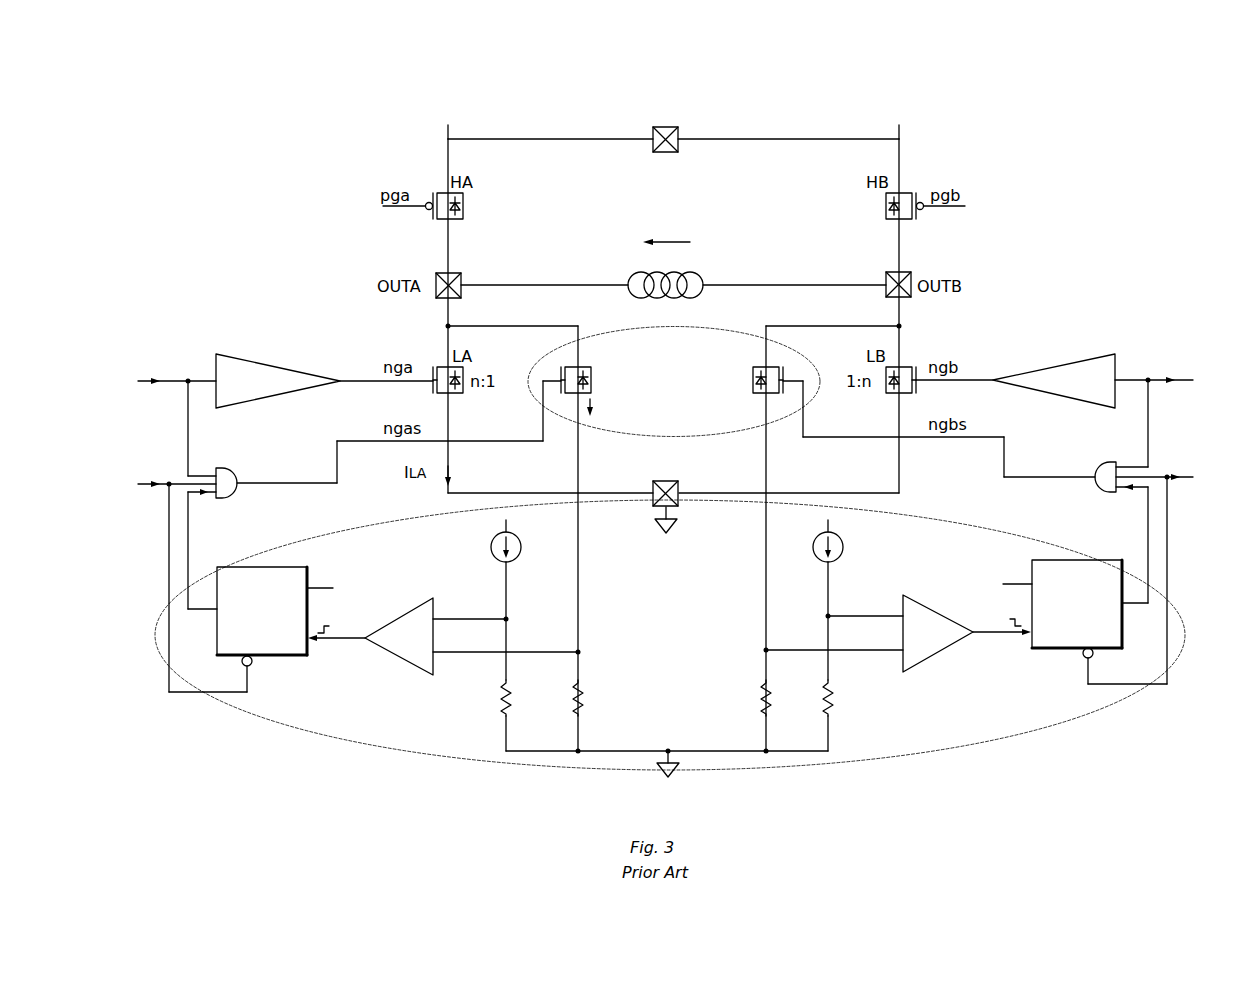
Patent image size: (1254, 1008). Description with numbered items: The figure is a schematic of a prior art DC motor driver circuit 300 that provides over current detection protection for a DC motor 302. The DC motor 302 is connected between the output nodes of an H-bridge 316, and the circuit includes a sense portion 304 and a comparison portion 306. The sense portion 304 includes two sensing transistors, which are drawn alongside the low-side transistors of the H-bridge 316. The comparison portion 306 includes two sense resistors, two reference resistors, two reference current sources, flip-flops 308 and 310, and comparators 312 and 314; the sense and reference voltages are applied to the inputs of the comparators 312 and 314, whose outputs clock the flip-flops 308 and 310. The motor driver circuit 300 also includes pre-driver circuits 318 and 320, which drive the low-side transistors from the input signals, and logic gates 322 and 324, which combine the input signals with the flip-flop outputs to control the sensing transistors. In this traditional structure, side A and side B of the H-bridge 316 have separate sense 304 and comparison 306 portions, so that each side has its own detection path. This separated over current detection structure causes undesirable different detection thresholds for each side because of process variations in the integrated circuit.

The motor driver circuit 300 is at (272, 86).
The DC motor 302 is at (702, 290).
The sense portion 304 is at (622, 336).
The comparison portion 306 is at (983, 741).
The flip-flop 308 is at (277, 657).
The flip-flop 310 is at (1080, 652).
The comparator 312 is at (398, 668).
The comparator 314 is at (929, 657).
The H-bridge 316 is at (448, 112).
The pre-driver circuit 318 is at (253, 362).
The pre-driver circuit 320 is at (1054, 364).
The logic gate 322 is at (232, 471).
The logic gate 324 is at (1100, 471).